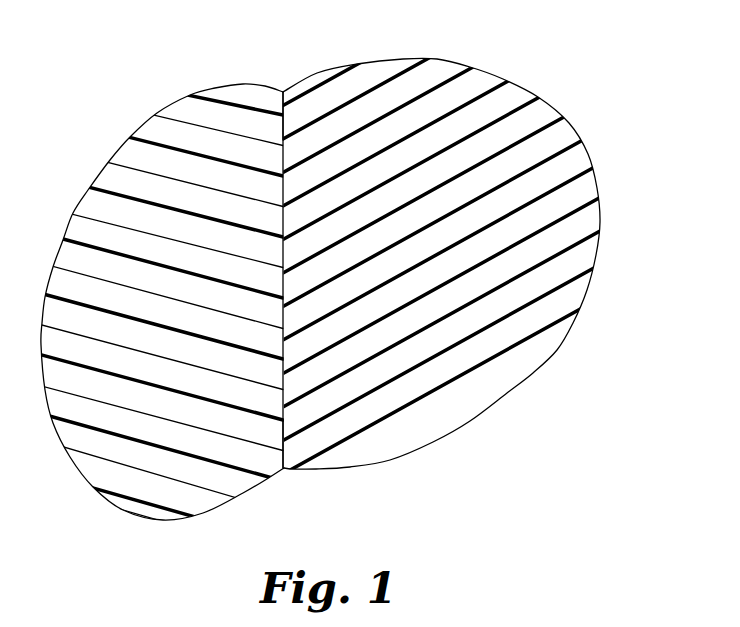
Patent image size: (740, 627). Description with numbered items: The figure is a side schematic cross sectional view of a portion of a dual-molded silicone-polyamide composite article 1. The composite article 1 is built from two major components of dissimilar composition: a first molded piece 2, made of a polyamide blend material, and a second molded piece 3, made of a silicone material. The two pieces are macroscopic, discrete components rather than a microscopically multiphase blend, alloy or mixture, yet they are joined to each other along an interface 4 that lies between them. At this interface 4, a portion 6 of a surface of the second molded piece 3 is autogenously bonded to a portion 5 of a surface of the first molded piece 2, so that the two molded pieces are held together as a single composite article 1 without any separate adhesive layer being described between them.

The dual-molded silicone-polyamide composite article 1 is at (327, 278).
The first molded piece 2 is at (98, 200).
The second molded piece 3 is at (577, 193).
The interface 4 is at (286, 127).
The portion of a surface of first molded piece 5 is at (291, 427).
The portion of a surface of second molded piece 6 is at (283, 196).